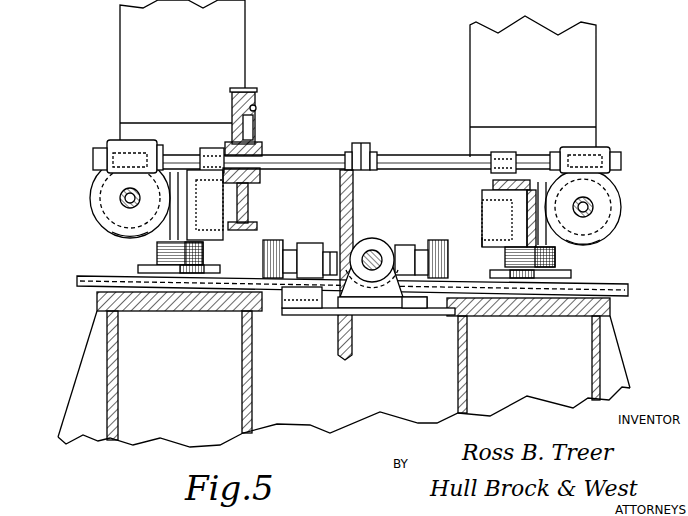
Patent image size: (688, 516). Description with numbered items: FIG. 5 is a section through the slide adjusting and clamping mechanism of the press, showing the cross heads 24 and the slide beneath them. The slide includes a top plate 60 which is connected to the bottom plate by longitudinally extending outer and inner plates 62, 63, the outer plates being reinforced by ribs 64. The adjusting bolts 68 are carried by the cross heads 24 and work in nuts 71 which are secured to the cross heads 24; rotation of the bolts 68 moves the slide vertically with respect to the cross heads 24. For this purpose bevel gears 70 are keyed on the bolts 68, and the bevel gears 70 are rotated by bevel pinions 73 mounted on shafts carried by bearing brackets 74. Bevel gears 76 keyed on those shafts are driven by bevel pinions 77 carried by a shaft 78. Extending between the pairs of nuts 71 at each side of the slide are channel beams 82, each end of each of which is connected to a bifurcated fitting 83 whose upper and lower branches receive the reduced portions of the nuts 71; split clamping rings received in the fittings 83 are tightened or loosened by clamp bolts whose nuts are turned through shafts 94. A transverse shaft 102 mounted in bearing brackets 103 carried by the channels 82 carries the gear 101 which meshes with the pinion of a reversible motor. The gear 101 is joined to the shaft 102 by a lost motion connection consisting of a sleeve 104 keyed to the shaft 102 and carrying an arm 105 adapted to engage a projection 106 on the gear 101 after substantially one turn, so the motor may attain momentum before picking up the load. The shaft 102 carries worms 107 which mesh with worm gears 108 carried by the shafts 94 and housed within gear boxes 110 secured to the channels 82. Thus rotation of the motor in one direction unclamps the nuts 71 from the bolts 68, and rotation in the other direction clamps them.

The cross head 24 is at (133, 33).
The top plate 60 is at (195, 311).
The outer plate 62 is at (119, 398).
The inner plate 63 is at (253, 387).
The rib 64 is at (80, 386).
The adjusting bolt 68 is at (157, 255).
The bevel gear 70 is at (90, 288).
The nut 71 is at (148, 128).
The bevel pinion 73 is at (263, 257).
The bearing bracket 74 is at (312, 288).
The bevel gear 76 is at (340, 217).
The bevel pinion 77 is at (386, 246).
The shaft 78 is at (374, 256).
The channel beam 82 is at (238, 200).
The bifurcated fitting 83 is at (480, 236).
The shaft 94 is at (128, 197).
The gear 101 is at (249, 89).
The transverse shaft 102 is at (420, 163).
The bearing bracket 103 is at (209, 148).
The sleeve 104 is at (262, 148).
The arm 105 is at (253, 124).
The projection 106 is at (257, 109).
The worm 107 is at (115, 140).
The worm gear 108 is at (100, 219).
The gear box 110 is at (106, 235).